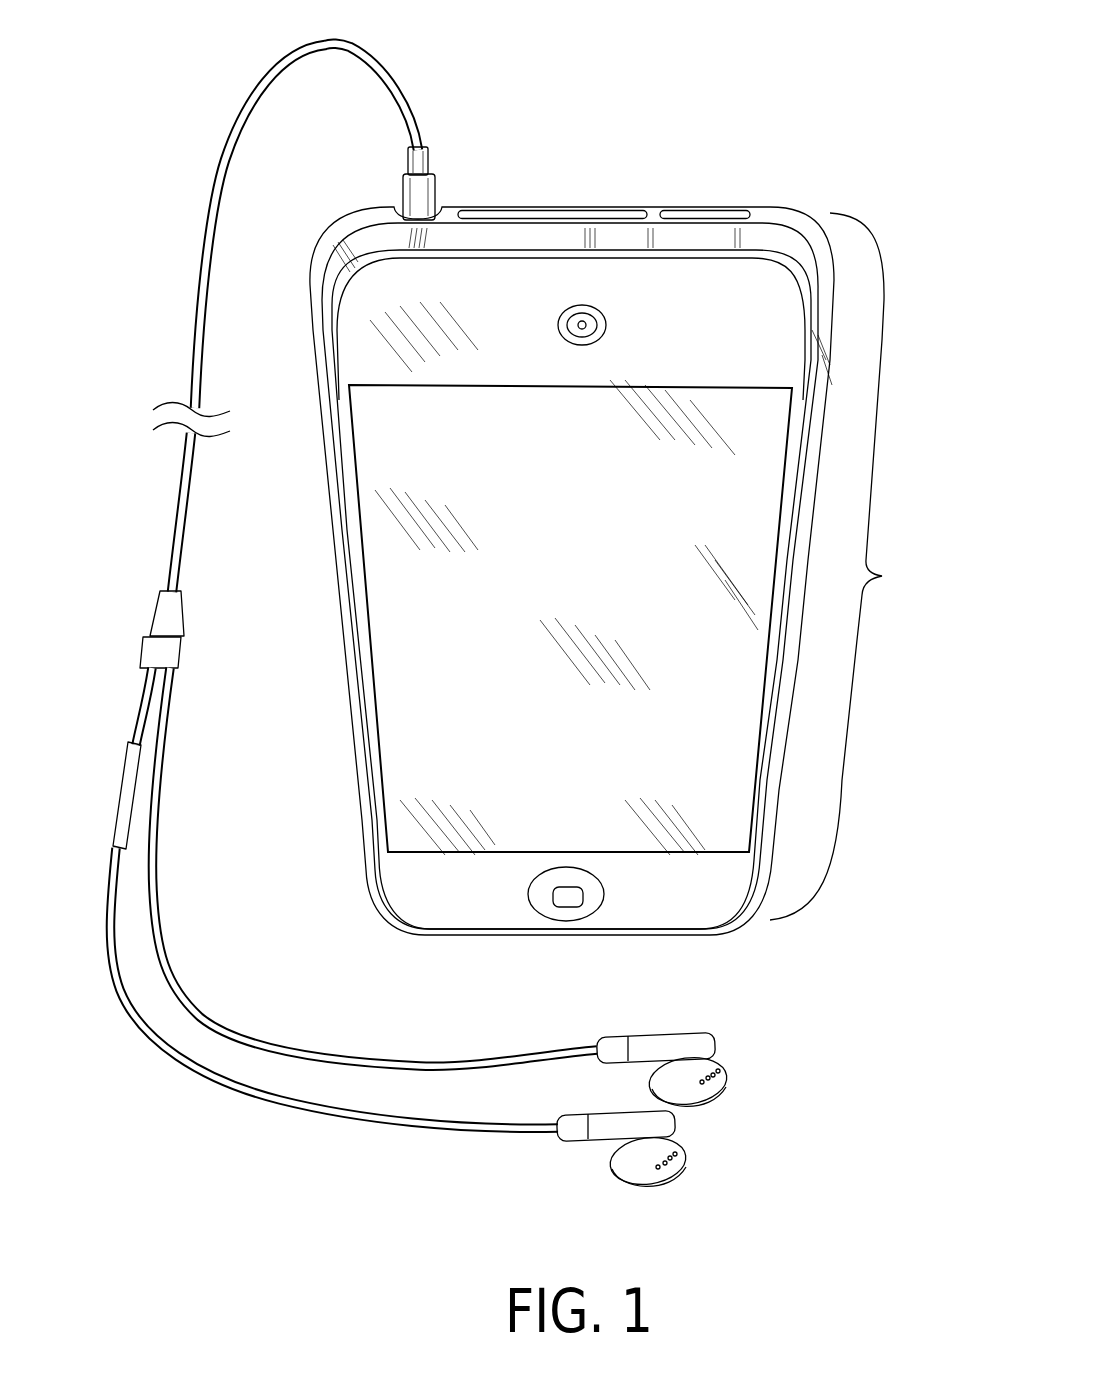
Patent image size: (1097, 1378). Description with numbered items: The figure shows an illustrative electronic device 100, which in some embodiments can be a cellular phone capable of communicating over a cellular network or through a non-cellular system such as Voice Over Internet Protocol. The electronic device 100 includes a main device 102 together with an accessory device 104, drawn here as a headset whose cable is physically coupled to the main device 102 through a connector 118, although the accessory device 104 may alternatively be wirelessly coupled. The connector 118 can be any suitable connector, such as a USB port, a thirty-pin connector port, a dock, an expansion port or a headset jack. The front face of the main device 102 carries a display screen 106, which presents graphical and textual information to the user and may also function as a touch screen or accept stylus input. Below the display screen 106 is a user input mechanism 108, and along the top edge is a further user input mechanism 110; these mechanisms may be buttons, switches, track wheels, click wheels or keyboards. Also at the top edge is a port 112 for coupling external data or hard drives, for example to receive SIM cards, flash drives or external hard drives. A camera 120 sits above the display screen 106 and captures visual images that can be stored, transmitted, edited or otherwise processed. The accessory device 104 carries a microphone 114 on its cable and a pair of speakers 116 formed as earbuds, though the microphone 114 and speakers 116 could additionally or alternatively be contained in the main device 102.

The electronic device 100 is at (838, 29).
The main device 102 is at (624, 571).
The accessory device 104 is at (282, 62).
The display screen 106 is at (601, 584).
The user input mechanism 108 is at (552, 910).
The user input mechanism 110 is at (710, 210).
The port 112 is at (562, 210).
The microphone 114 is at (122, 780).
The speaker 116 is at (735, 1082).
The connector 118 is at (398, 206).
The camera 120 is at (606, 322).